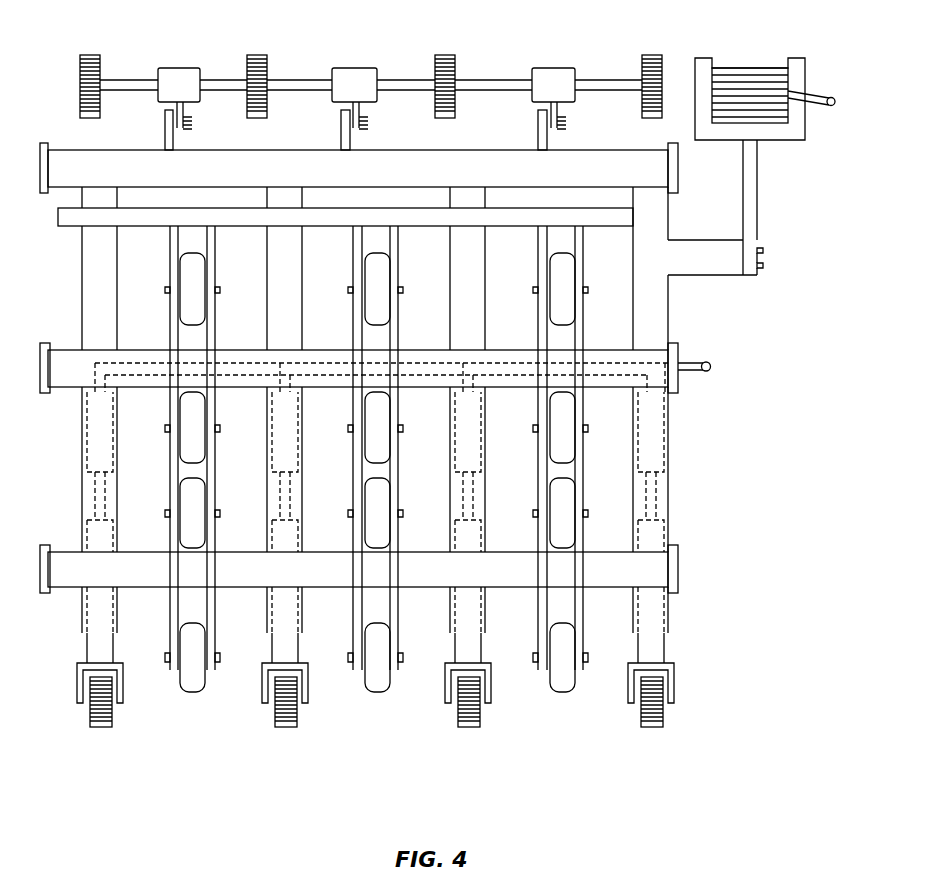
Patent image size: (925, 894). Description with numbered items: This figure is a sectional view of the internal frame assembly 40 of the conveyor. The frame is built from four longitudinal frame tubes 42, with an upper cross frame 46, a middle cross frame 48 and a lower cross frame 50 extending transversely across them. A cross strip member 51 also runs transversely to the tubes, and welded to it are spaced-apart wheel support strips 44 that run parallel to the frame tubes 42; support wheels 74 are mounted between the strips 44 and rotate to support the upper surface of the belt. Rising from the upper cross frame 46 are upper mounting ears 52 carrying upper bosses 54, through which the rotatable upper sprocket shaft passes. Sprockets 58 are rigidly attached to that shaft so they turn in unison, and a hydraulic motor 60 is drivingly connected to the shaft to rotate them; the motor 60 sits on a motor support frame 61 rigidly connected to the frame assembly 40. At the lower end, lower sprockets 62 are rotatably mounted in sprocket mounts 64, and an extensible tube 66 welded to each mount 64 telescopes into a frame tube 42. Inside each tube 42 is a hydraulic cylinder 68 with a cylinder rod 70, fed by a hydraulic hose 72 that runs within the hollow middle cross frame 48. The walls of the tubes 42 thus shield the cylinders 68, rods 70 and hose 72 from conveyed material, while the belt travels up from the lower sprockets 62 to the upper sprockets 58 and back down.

The internal frame assembly 40 is at (80, 145).
The longitudinal frame tubes 42 is at (95, 255).
The wheel support strips 44 is at (172, 345).
The upper cross frame 46 is at (450, 165).
The middle cross frame 48 is at (287, 363).
The lower cross frame 50 is at (333, 560).
The cross strip member 51 is at (195, 213).
The upper mounting ears 52 is at (165, 136).
The upper bosses 54 is at (182, 68).
The sprockets 58 is at (88, 55).
The hydraulic motor 60 is at (772, 68).
The motor support frame 61 is at (760, 224).
The lower sprockets 62 is at (98, 728).
The sprocket mounts 64 is at (120, 704).
The extensible tube 66 is at (86, 621).
The hydraulic cylinder 68 is at (81, 425).
The cylinder rod 70 is at (90, 490).
The hydraulic hose 72 is at (688, 372).
The support wheels 74 is at (192, 286).